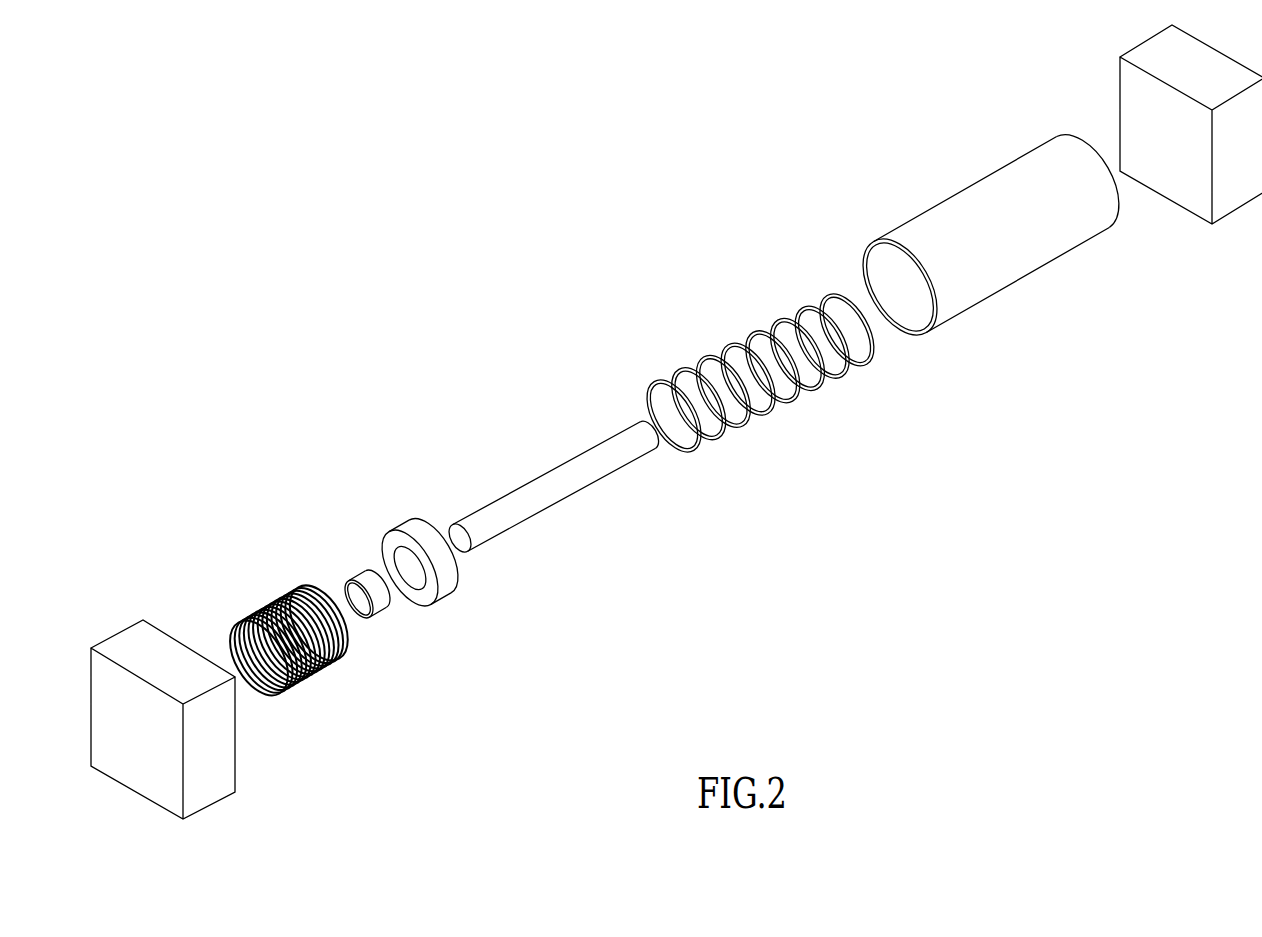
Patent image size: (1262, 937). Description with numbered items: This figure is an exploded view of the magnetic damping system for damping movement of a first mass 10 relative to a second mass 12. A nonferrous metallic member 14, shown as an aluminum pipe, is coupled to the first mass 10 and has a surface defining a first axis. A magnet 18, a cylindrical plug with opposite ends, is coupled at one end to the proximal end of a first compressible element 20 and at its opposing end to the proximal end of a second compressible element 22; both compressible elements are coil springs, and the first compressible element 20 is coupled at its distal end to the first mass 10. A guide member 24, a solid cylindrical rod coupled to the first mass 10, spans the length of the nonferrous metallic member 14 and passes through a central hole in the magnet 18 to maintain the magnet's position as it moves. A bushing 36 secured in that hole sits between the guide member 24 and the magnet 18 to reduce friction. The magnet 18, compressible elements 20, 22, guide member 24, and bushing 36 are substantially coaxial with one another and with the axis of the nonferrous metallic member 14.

The first mass 10 is at (1237, 210).
The second mass 12 is at (158, 628).
The nonferrous metallic member 14 is at (990, 173).
The magnet 18 is at (440, 603).
The first compressible element 20 is at (728, 342).
The second compressible element 22 is at (323, 668).
The guide member 24 is at (557, 507).
The bushing 36 is at (377, 612).